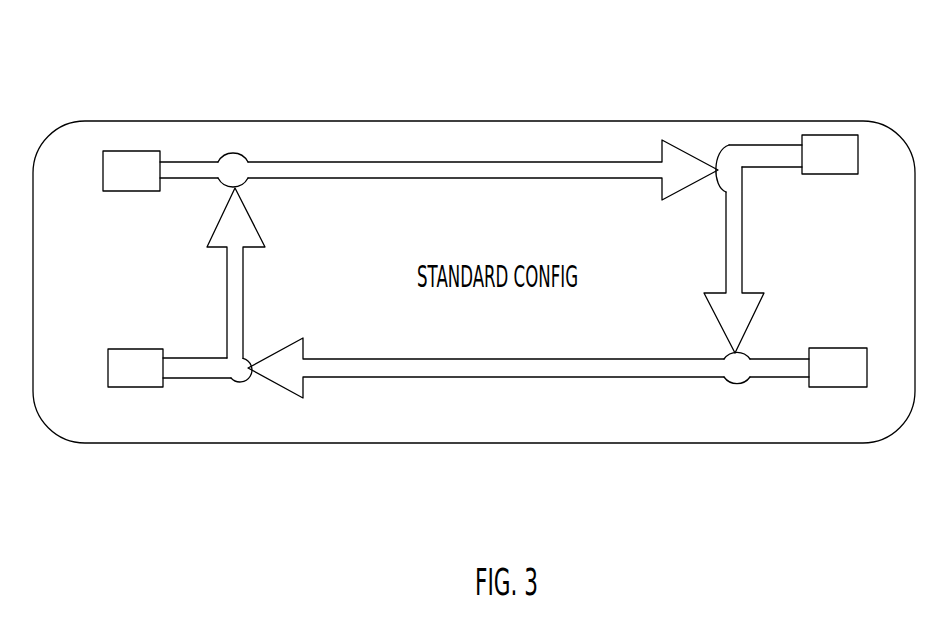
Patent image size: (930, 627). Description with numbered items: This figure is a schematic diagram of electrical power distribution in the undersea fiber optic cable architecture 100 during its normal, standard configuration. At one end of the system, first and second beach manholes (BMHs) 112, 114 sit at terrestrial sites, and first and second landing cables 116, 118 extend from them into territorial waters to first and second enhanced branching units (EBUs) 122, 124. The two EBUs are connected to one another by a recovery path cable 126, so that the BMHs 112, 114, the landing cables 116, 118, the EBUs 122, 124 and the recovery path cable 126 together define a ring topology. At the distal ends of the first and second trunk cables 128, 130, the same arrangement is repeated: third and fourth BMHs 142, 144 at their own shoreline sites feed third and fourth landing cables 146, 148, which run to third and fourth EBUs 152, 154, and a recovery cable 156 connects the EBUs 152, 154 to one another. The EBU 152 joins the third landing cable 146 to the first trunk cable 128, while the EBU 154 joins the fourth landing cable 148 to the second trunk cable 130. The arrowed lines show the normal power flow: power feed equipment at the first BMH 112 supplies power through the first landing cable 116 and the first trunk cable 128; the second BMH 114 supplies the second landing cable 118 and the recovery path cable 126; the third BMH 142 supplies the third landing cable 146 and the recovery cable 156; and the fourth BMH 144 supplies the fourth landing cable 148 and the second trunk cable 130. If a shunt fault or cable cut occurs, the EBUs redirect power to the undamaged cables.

The architecture 100 is at (385, 53).
The first BMH 112 is at (132, 158).
The second BMH 114 is at (133, 387).
The first landing cable 116 is at (190, 167).
The second landing cable 118 is at (192, 380).
The first enhanced branching unit 122 is at (230, 154).
The second enhanced branching unit 124 is at (237, 385).
The recovery path cable 126 is at (230, 307).
The first trunk cable 128 is at (487, 168).
The second trunk cable 130 is at (495, 377).
The third BMH 142 is at (834, 148).
The fourth BMH 144 is at (832, 388).
The third landing cable 146 is at (773, 153).
The fourth landing cable 148 is at (776, 377).
The third enhanced branching unit 152 is at (730, 146).
The fourth enhanced branching unit 154 is at (729, 383).
The recovery cable 156 is at (733, 253).